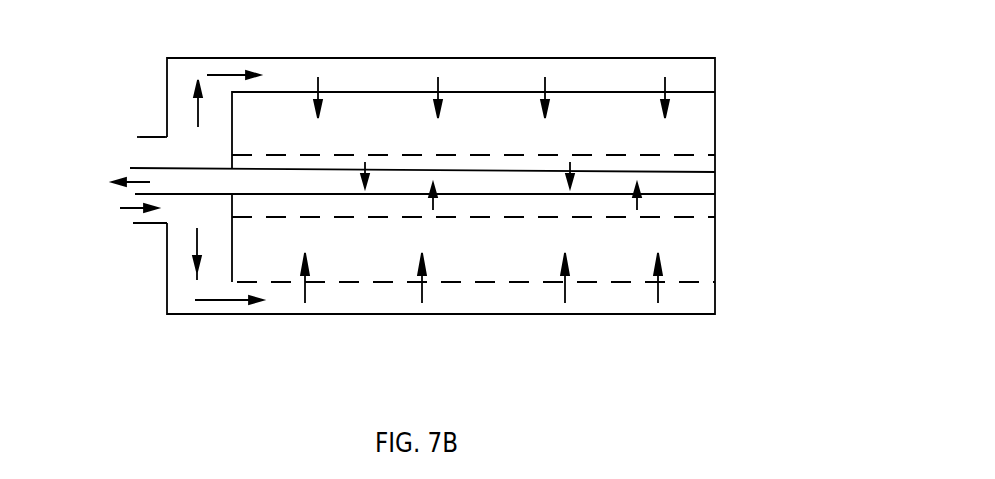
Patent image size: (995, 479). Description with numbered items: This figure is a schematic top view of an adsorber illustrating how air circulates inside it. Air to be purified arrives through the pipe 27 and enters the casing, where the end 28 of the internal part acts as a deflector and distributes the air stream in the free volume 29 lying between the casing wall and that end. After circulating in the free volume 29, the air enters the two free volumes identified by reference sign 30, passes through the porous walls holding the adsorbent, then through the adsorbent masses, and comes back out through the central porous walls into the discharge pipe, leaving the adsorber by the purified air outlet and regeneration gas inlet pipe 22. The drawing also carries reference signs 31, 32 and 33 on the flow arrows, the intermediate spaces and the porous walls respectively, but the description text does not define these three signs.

The purified air outlet and regeneration gas inlet pipe 22 is at (147, 183).
The pipe 27 is at (146, 134).
The end of the internal part 28 is at (232, 262).
The free volume 29 is at (177, 101).
The free volumes V4 and V5 30 is at (399, 299).
The flow arrows through perforated plate 31 is at (665, 90).
The intermediate chamber 32 is at (696, 135).
The perforated plate 33 is at (498, 90).